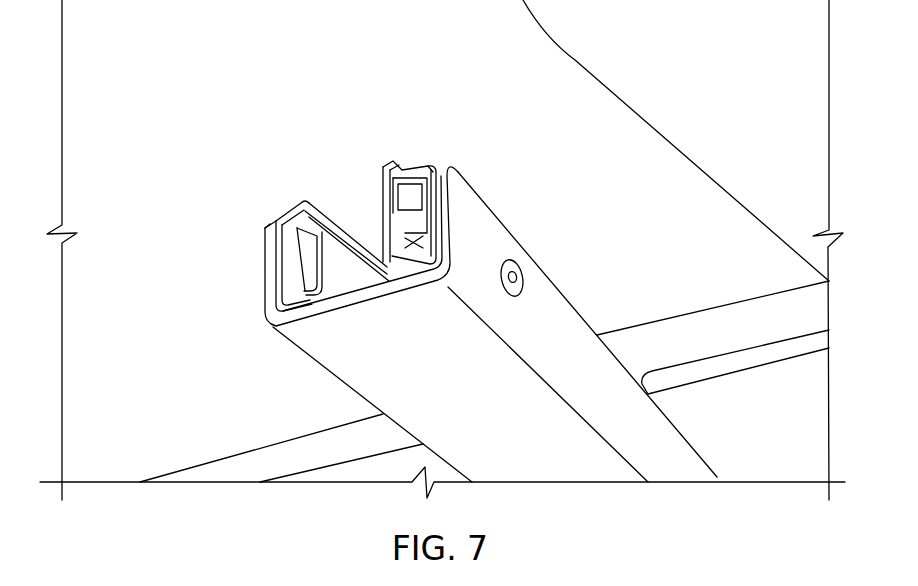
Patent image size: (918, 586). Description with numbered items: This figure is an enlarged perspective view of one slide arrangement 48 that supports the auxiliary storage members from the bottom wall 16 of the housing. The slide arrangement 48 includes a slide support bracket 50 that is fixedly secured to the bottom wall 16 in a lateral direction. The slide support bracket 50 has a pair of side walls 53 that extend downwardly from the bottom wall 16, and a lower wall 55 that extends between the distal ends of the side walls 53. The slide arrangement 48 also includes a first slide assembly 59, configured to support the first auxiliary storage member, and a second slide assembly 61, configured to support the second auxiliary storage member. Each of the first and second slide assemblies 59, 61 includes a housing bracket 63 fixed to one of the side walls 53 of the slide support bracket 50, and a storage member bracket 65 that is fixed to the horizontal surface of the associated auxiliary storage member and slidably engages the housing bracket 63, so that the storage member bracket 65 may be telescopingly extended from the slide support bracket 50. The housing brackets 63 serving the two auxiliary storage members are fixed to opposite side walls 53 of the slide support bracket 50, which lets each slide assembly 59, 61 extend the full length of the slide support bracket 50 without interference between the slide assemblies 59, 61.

The bottom wall 16 is at (150, 309).
The slide arrangement 48 is at (564, 208).
The slide support bracket 50 is at (507, 224).
The side wall 53 is at (266, 273).
The lower wall 55 is at (380, 297).
The first slide assembly 59 is at (288, 202).
The second slide assembly 61 is at (436, 153).
The housing bracket 63 is at (275, 223).
The storage member bracket 65 is at (330, 225).